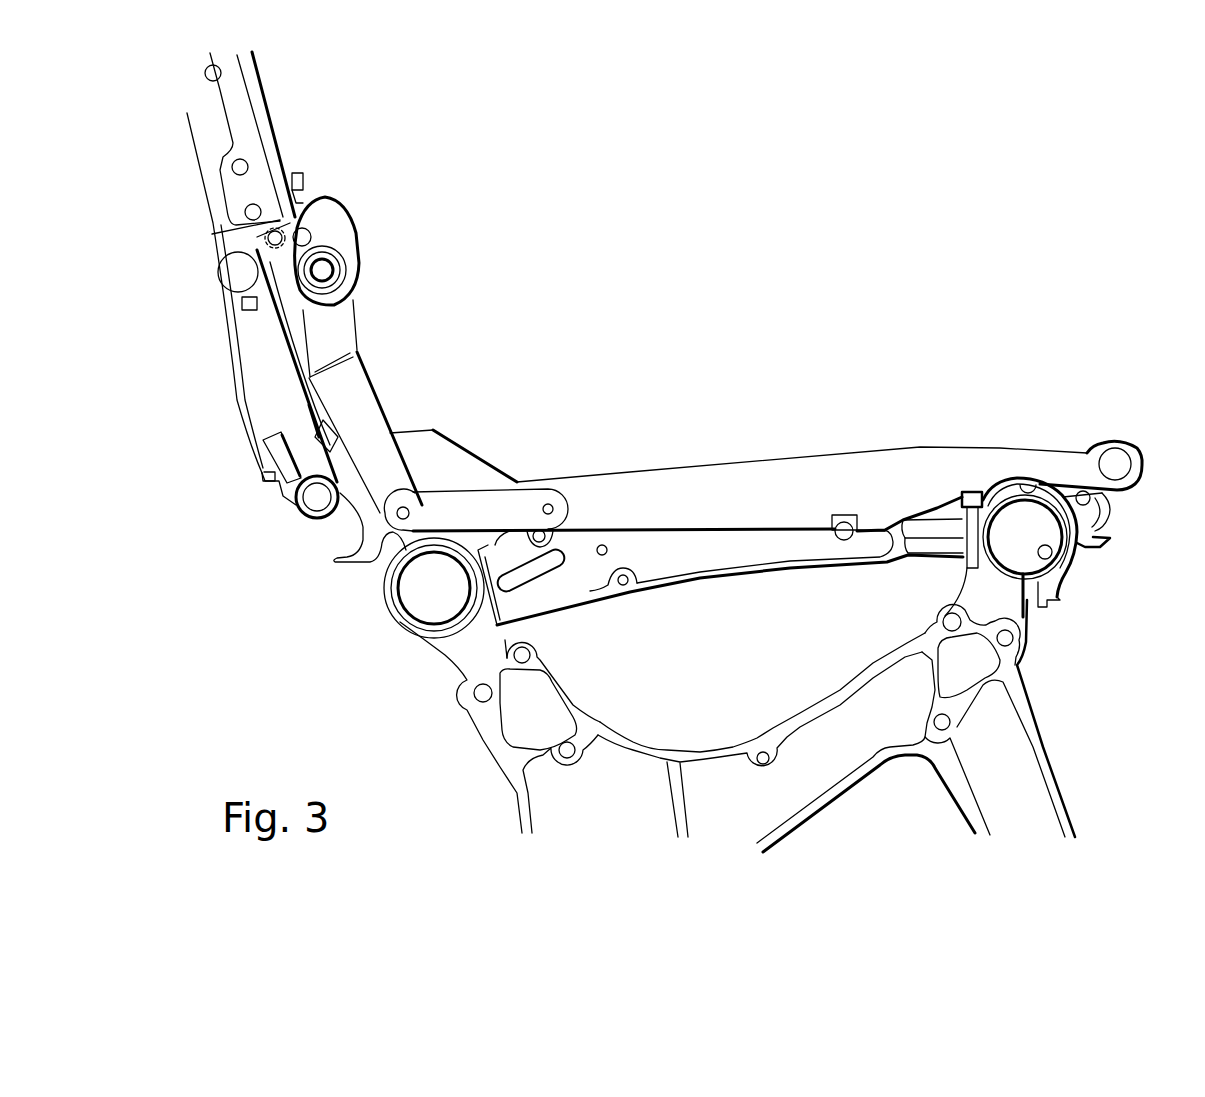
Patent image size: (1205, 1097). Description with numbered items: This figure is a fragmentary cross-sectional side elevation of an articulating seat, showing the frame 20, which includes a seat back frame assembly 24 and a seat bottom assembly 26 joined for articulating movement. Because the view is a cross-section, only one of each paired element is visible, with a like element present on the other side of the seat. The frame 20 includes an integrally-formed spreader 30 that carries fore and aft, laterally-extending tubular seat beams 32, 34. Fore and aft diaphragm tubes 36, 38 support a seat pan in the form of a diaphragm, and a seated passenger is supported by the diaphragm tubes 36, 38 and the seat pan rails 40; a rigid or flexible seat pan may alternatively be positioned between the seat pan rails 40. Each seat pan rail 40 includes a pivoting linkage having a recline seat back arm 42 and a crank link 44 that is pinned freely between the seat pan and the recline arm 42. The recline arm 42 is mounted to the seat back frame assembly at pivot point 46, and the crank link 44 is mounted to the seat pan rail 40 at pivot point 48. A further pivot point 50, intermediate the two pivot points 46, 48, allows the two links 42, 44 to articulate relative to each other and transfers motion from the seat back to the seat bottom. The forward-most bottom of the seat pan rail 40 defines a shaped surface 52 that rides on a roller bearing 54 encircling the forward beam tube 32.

The frame 20 is at (190, 396).
The seat back frame assembly 24 is at (243, 115).
The seat bottom assembly 26 is at (547, 800).
The spreader 30 is at (712, 550).
The forward seat beam 32 is at (1046, 552).
The aft seat beam 34 is at (413, 593).
The fore diaphragm tube 36 is at (1118, 470).
The aft diaphragm tube 38 is at (317, 498).
The seat pan rail 40 is at (730, 488).
The recline seat back arm 42 is at (358, 407).
The crank link 44 is at (480, 502).
The pivot point 46 is at (325, 270).
The pivot point 48 is at (550, 508).
The pivot point 50 is at (433, 430).
The shaped surface 52 is at (1028, 486).
The roller bearing 54 is at (1112, 525).